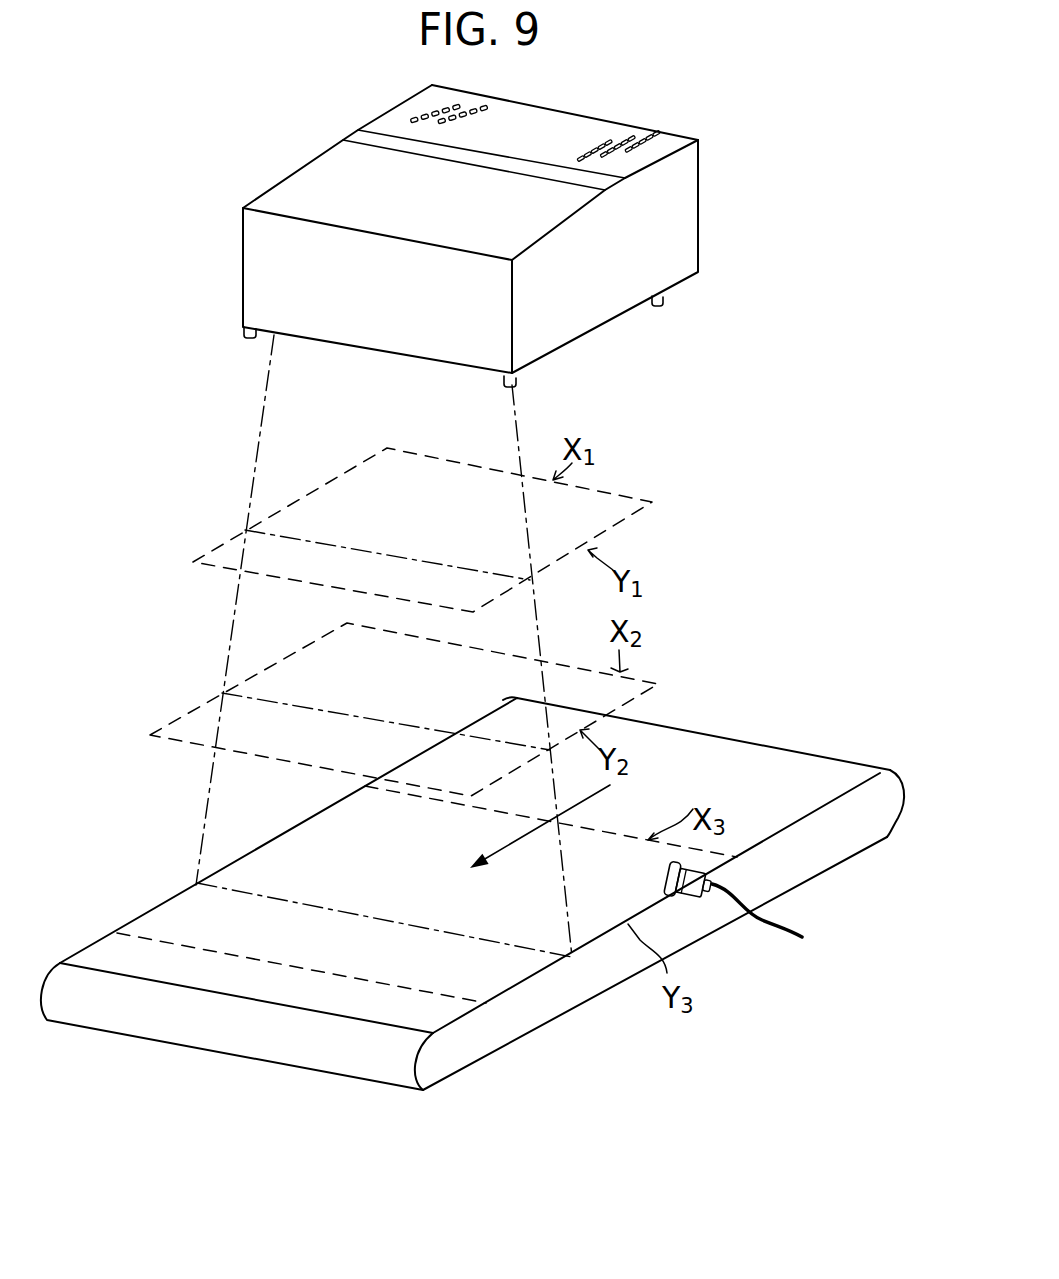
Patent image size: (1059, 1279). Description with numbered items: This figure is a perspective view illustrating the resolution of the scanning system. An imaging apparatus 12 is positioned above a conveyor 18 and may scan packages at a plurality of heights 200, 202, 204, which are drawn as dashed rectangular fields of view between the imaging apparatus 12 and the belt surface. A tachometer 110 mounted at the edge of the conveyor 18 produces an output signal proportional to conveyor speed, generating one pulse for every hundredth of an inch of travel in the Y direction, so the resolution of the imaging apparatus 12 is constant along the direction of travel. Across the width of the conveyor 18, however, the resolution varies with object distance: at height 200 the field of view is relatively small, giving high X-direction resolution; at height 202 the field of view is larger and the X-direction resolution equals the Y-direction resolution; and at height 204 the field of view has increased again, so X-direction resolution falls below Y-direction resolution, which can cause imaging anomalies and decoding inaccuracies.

The imaging apparatus 12 is at (214, 141).
The conveyor 18 is at (868, 766).
The height 200 is at (652, 502).
The height 202 is at (650, 684).
The height 204 is at (722, 856).
The tachometer 110 is at (708, 896).